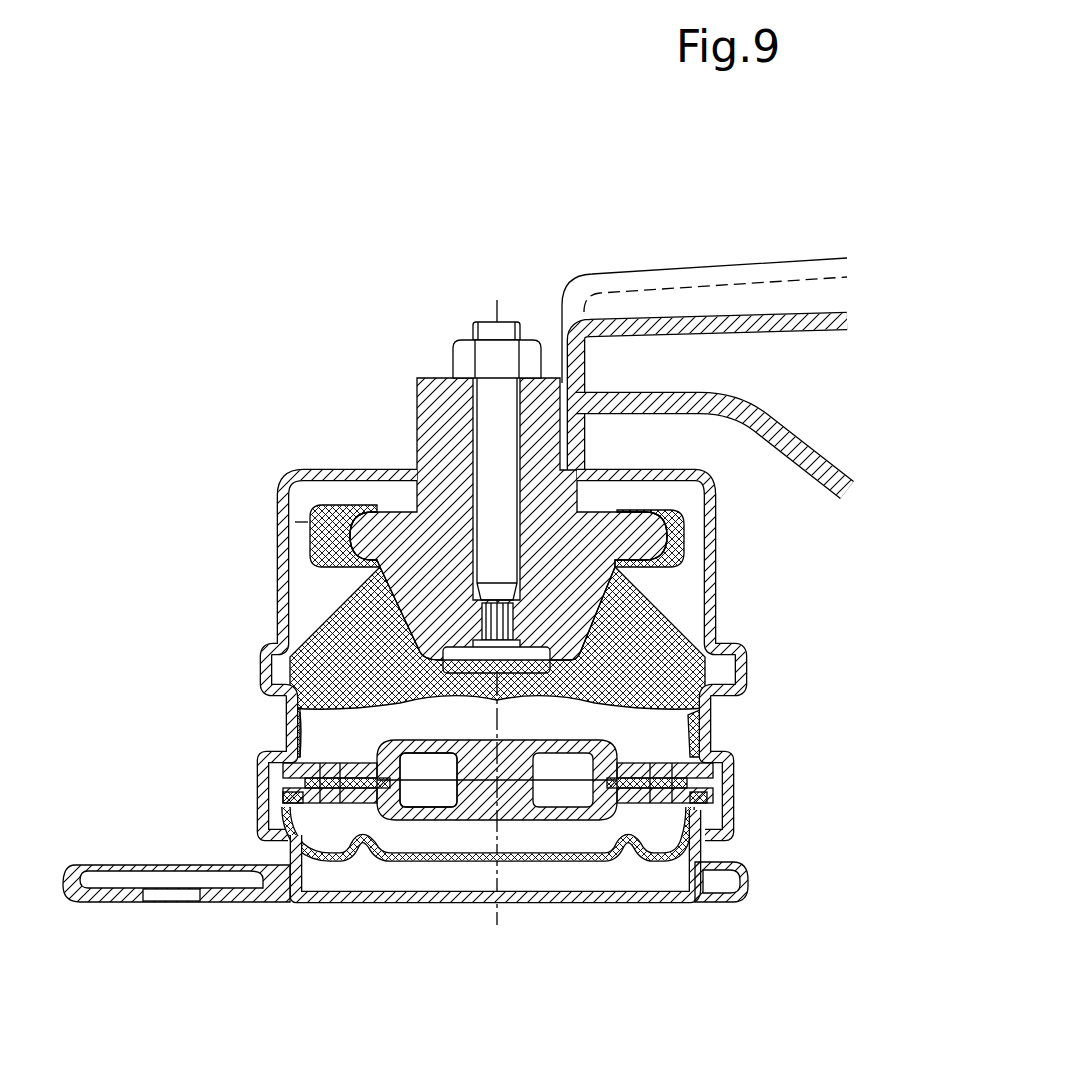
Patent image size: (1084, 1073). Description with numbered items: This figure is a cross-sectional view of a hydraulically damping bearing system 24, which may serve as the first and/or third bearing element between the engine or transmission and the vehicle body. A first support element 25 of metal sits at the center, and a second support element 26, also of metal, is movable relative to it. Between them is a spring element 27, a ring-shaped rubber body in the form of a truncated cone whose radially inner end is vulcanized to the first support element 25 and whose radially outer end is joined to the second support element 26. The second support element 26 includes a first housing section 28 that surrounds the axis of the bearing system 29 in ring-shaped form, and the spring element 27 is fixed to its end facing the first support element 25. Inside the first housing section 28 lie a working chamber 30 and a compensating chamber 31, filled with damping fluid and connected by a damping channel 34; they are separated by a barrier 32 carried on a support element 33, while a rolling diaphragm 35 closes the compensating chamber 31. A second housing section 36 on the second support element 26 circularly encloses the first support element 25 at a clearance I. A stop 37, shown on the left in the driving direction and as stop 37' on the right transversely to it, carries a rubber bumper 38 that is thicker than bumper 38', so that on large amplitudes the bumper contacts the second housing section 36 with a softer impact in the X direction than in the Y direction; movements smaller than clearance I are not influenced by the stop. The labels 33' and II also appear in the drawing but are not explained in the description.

The hydraulically damping bearing system 24 is at (424, 928).
The first support element 25 is at (430, 483).
The second support element 26 is at (283, 890).
The spring element 27 is at (658, 652).
The first housing section 28 is at (710, 720).
The axis of the bearing system 29 is at (500, 885).
The working chamber 30 is at (330, 722).
The compensating chamber 31 is at (280, 833).
The barrier 32 is at (624, 790).
The support element 33 is at (498, 867).
The elastomer strip 33' is at (557, 759).
The damping channel 34 is at (440, 800).
The diaphragm 35 is at (345, 862).
The second housing section 36 is at (283, 557).
The stop 37 is at (324, 465).
The stop 37' is at (713, 523).
The elastic material (rubber bumper) 38 is at (297, 469).
The rubber bumper 38' is at (712, 538).
The clearance I is at (308, 522).
The bracket II is at (704, 367).